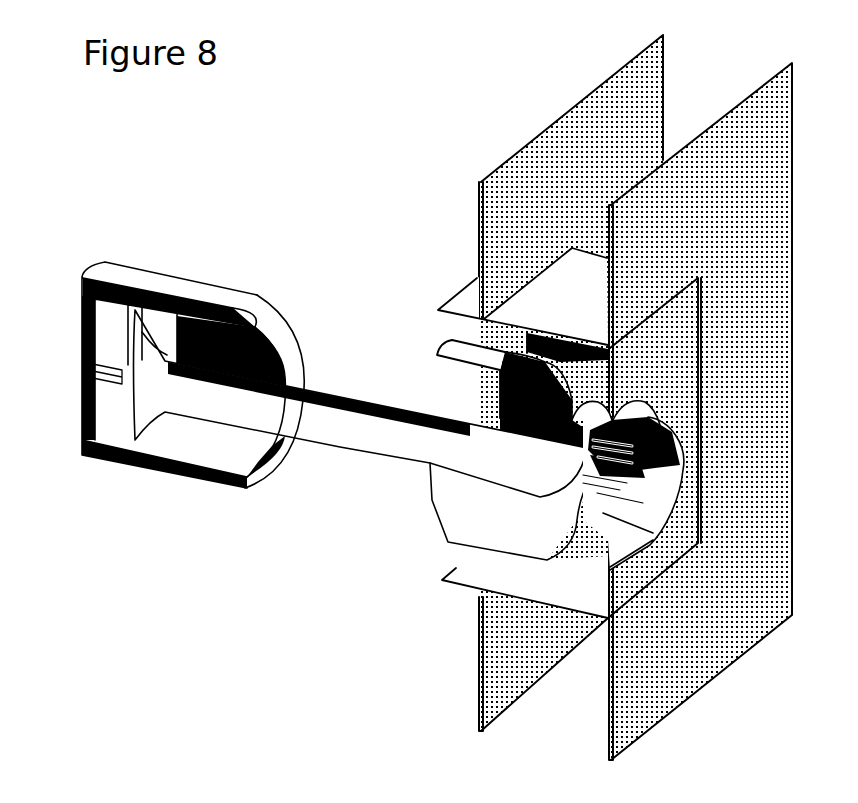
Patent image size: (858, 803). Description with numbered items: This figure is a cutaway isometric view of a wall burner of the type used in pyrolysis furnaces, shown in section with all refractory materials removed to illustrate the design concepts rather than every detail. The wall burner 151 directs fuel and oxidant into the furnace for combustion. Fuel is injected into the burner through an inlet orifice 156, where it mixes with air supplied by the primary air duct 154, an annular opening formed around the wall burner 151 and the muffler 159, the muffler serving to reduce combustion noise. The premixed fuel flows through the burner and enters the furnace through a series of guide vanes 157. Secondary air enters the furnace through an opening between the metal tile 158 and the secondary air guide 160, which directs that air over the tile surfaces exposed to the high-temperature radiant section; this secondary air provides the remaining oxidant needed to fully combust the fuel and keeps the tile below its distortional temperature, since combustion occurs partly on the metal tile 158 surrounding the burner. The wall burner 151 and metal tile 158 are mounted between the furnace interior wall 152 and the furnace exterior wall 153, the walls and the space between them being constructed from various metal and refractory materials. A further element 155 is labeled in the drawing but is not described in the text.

The wall burner 151 is at (410, 403).
The furnace interior wall 152 is at (700, 411).
The furnace exterior wall 153 is at (571, 383).
The primary air duct 154 is at (278, 357).
The bracket flange 155 is at (448, 562).
The inlet orifice 156 is at (100, 383).
The guide vanes 157 is at (658, 547).
The metal tile 158 is at (654, 448).
The muffler 159 is at (230, 275).
The secondary air guide 160 is at (493, 523).